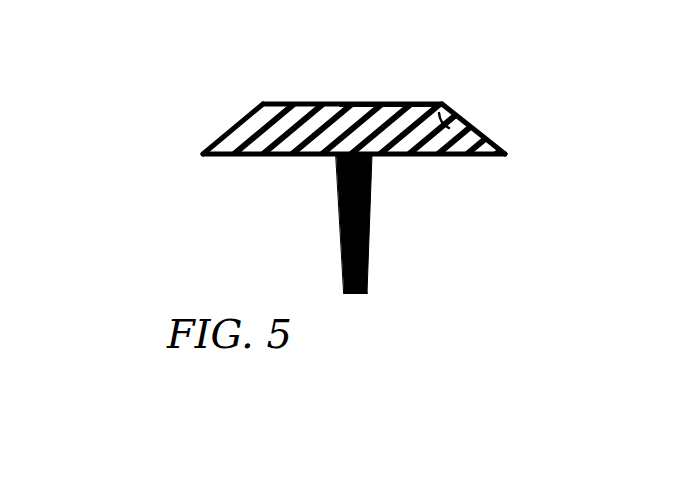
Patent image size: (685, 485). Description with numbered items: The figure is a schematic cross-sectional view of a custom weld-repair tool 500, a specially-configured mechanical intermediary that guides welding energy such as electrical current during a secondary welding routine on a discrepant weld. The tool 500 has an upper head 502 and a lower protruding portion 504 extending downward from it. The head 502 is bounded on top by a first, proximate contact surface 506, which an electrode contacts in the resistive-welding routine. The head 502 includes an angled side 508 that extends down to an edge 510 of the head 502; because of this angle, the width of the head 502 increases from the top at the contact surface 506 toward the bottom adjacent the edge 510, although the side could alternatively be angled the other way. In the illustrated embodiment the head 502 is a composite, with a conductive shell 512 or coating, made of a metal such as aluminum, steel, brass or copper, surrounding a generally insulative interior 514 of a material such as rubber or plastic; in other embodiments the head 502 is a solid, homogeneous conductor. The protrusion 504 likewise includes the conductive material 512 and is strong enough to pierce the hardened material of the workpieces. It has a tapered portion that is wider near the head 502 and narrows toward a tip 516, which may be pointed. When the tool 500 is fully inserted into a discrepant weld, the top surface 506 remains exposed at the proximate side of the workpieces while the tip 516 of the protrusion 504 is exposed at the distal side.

The weld-repair tool 500 is at (541, 83).
The head 502 is at (527, 137).
The protruding portion 504 is at (372, 212).
The top contact surface 506 is at (310, 93).
The angled side 508 is at (224, 137).
The edge 510 is at (203, 154).
The conductive shell 512 is at (387, 104).
The insulative interior 514 is at (442, 105).
The tip 516 is at (358, 302).